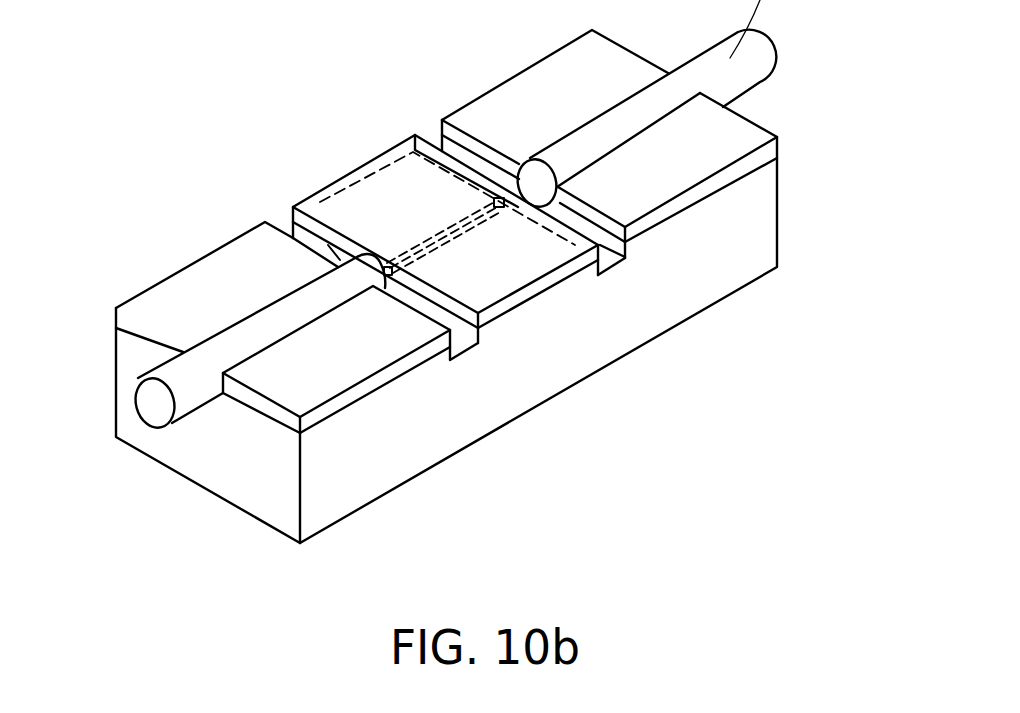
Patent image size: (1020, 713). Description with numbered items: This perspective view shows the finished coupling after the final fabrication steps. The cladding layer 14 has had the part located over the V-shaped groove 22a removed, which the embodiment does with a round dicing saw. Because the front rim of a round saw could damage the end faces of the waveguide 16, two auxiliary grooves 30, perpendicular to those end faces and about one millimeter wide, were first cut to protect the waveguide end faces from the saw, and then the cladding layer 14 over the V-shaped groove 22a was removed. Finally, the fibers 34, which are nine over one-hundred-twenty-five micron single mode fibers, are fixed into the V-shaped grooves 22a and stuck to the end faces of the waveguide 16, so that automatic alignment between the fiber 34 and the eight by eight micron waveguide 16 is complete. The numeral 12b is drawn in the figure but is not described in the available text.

The cladding layer 14 is at (123, 322).
The optical fiber 12b is at (316, 256).
The waveguide 16 is at (513, 290).
The V-shaped groove 22a is at (207, 405).
The auxiliary groove 30 is at (480, 342).
The fiber 34 is at (175, 410).